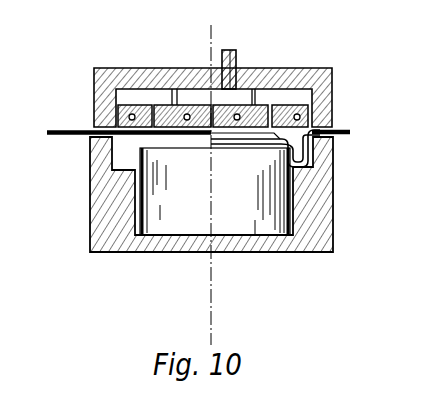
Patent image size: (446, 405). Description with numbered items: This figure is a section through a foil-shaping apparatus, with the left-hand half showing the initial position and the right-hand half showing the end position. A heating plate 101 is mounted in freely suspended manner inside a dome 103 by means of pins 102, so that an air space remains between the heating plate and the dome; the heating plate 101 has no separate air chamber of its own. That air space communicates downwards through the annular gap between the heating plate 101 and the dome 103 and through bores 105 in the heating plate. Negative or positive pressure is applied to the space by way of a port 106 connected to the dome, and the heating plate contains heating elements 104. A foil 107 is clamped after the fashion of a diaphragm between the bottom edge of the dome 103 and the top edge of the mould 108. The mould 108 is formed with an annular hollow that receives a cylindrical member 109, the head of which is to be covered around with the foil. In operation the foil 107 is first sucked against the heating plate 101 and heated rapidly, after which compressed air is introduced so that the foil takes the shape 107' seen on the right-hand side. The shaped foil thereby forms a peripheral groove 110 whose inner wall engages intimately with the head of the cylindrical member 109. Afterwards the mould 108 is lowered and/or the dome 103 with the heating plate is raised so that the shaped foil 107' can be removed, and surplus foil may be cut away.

The heating plate 101 is at (209, 68).
The pins 102 is at (257, 97).
The dome 103 is at (178, 82).
The heating elements 104 is at (107, 102).
The bores 105 is at (155, 108).
The port 106 is at (229, 50).
The foil 107 is at (159, 155).
The shaped foil 107' is at (344, 151).
The mould 108 is at (325, 248).
The cylindrical member 109 is at (256, 222).
The peripheral groove 110 is at (301, 167).